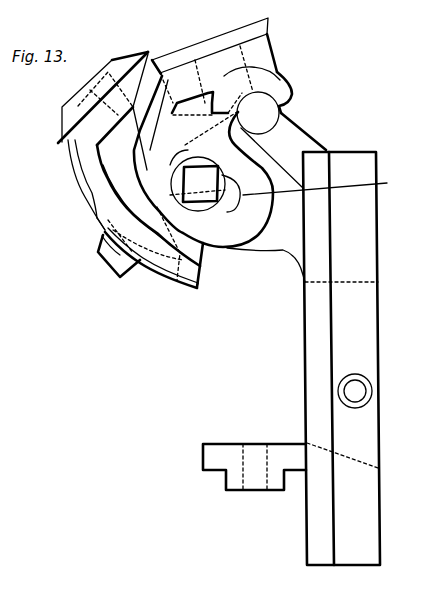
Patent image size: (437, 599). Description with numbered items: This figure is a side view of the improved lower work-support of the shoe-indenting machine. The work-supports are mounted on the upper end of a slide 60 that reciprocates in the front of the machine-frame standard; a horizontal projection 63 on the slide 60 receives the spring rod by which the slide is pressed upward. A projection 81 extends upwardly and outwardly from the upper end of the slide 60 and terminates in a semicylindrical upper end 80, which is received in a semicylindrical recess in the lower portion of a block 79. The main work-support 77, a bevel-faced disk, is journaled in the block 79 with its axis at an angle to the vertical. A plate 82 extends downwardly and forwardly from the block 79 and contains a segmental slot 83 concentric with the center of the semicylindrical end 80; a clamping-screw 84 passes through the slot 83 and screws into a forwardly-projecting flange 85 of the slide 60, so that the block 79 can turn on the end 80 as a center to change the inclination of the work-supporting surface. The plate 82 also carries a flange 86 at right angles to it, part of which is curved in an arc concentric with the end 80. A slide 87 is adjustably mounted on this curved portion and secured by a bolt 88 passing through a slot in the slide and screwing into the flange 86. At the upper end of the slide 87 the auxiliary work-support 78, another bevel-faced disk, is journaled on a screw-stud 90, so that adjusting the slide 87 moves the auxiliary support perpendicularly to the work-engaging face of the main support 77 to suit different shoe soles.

The slide 60 is at (378, 296).
The horizontal projection 63 is at (220, 445).
The main work-support 77 is at (268, 20).
The auxiliary work-support 78 is at (60, 120).
The block 79 is at (266, 58).
The semicylindrical upper end 80 is at (287, 107).
The projection 81 is at (295, 138).
The plate 82 is at (203, 161).
The segmental slot 83 is at (330, 182).
The clamping-screw 84 is at (205, 181).
The forwardly-projecting flange 85 is at (268, 247).
The flange 86 is at (200, 255).
The slide 87 is at (155, 272).
The bolt 88 is at (98, 258).
The screw-stud 90 is at (97, 62).